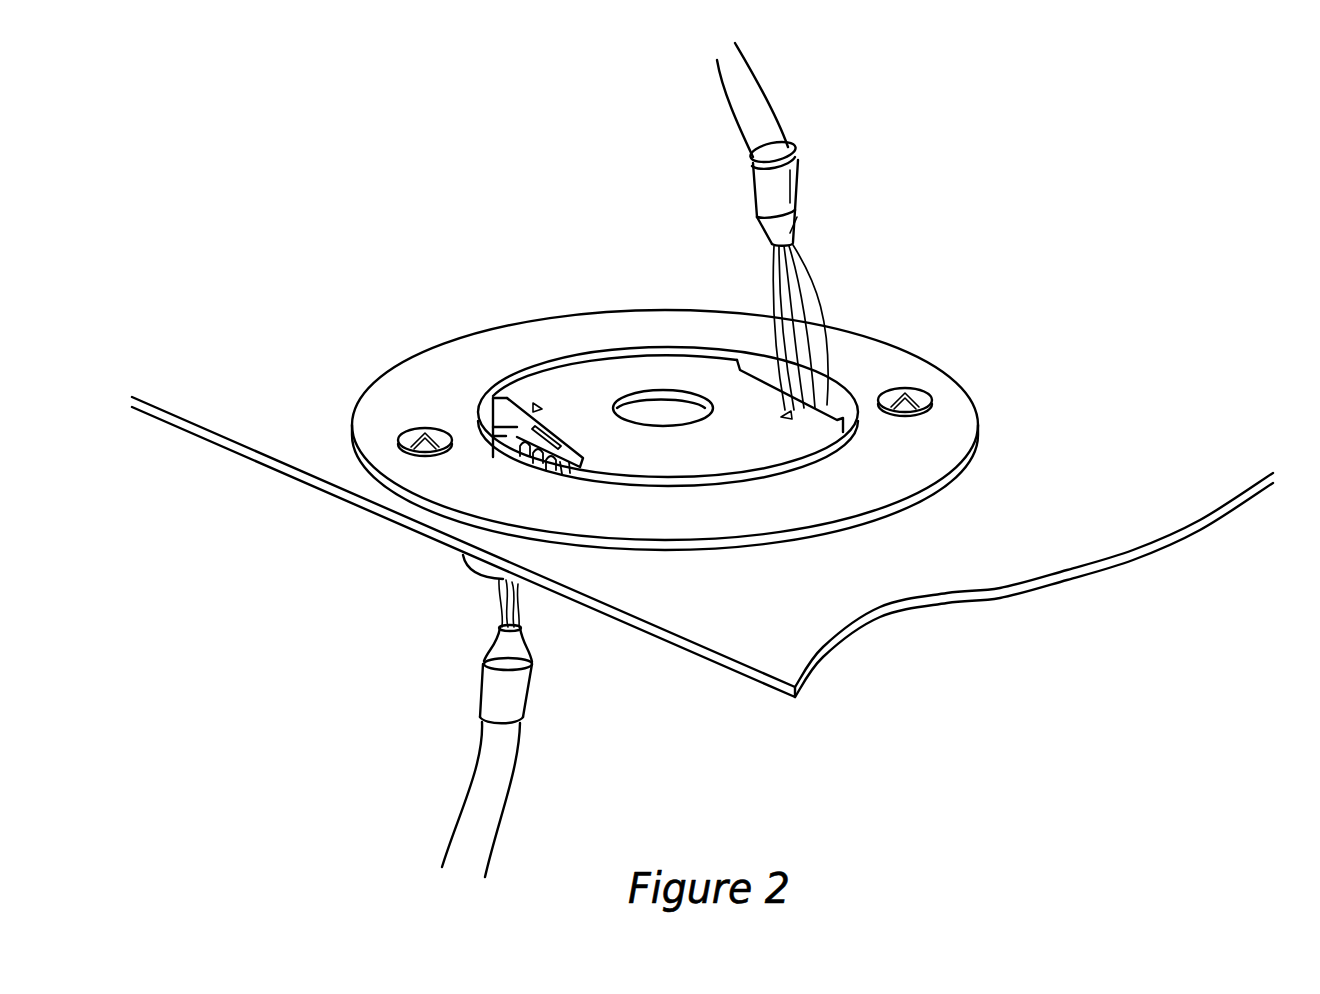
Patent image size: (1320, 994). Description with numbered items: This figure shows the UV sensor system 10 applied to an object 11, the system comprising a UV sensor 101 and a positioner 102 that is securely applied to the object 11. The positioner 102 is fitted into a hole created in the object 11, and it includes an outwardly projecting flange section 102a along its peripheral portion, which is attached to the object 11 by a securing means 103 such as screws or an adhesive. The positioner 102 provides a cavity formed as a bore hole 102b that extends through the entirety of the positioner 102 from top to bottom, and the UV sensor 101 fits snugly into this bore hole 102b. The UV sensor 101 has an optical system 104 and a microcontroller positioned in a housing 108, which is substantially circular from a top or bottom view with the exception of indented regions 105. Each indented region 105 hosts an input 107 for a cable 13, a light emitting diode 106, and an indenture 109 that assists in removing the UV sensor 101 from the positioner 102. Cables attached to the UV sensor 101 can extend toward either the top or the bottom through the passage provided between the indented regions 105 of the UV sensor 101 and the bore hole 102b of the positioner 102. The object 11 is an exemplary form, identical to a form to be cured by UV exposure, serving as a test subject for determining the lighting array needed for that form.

The sensor assembly 10 is at (423, 322).
The object 11 is at (792, 655).
The cable 13 is at (822, 297).
The UV sensor 101 is at (625, 442).
The positioner 102 is at (723, 393).
The flange section 102a is at (560, 333).
The bore hole 102b is at (522, 363).
The securing means 103 is at (907, 390).
The optical system 104 is at (690, 417).
The indented region 105 is at (489, 503).
The light emitting diode 106 is at (580, 480).
The input 107 is at (520, 442).
The housing 108 is at (670, 363).
The indenture 109 is at (579, 480).